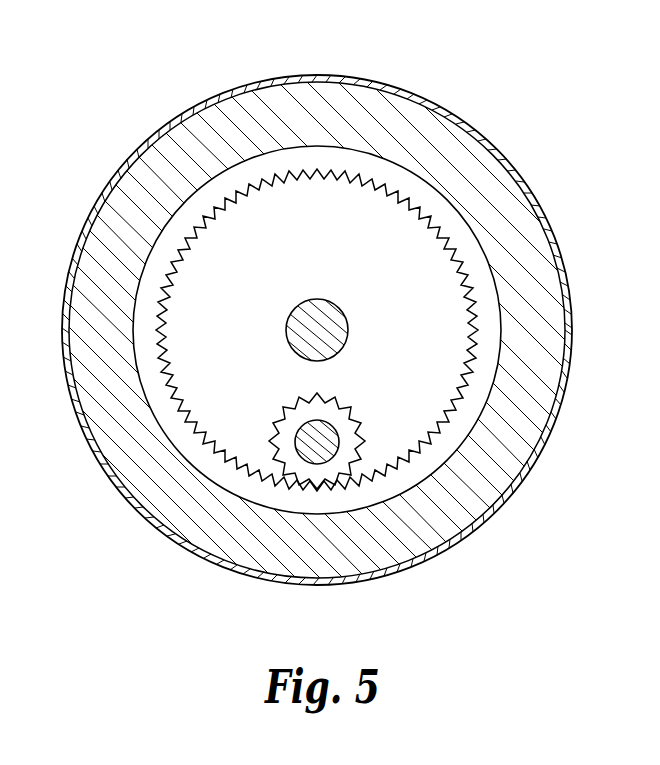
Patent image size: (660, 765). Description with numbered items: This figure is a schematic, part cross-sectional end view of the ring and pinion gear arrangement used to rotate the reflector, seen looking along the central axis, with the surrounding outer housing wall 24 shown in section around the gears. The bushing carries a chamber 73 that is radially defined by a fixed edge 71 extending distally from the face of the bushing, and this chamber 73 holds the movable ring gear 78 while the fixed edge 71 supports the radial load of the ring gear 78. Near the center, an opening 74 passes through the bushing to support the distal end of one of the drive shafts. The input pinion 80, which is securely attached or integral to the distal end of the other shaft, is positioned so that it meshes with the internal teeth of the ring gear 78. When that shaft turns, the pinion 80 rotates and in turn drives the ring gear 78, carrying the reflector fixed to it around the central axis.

The housing 24 is at (428, 98).
The fixed edge 71 is at (473, 172).
The chamber 73 is at (478, 256).
The opening 74 is at (303, 298).
The ring gear 78 is at (435, 458).
The input pinion 80 is at (290, 458).